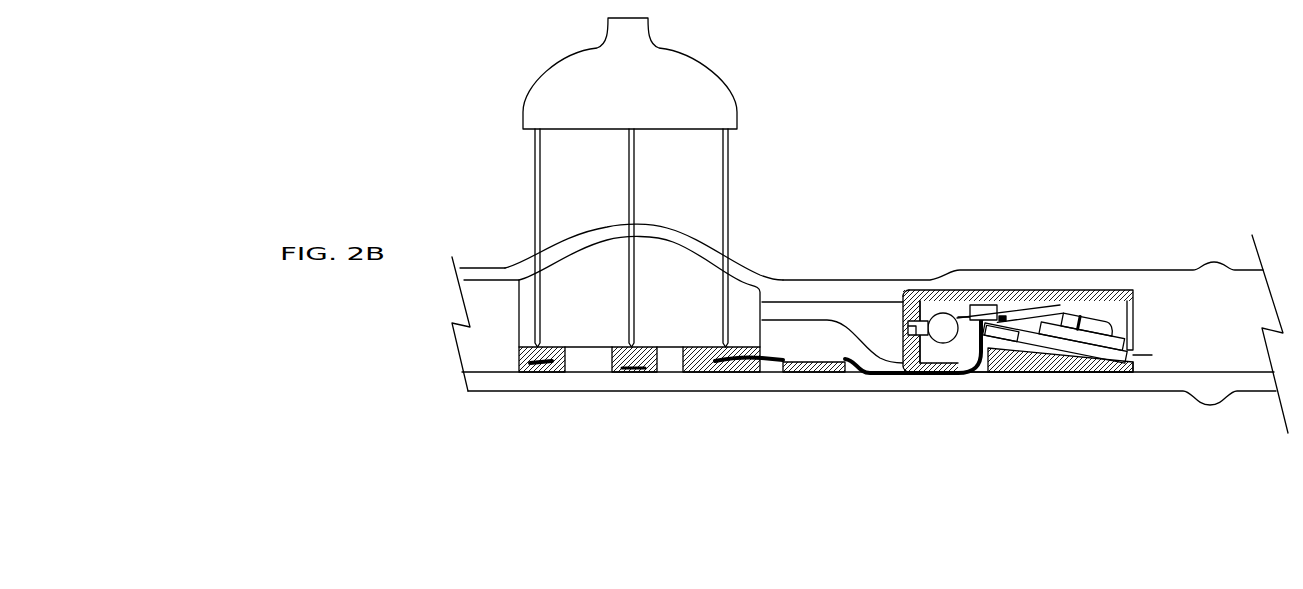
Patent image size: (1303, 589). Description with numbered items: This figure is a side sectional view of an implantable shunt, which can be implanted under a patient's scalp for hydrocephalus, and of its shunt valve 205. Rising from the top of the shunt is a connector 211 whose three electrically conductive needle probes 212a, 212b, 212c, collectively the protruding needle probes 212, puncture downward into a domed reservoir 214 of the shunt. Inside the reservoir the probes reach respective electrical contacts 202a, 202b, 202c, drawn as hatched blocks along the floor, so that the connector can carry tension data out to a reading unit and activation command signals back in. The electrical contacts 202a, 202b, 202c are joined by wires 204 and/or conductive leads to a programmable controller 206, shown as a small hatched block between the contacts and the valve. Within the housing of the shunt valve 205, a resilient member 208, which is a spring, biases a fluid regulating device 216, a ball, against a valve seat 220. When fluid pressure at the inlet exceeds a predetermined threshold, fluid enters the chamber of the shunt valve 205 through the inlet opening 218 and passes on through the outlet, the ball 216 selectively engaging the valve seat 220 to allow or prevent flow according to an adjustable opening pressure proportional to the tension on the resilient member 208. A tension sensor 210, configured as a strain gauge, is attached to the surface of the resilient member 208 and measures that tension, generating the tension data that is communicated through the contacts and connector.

The shunt valve 205 is at (1143, 295).
The connector 211 is at (703, 63).
The electrically conductive needle probe 212a is at (535, 183).
The electrically conductive needle probe 212b is at (635, 182).
The electrically conductive needle probe 212c is at (728, 188).
The electrically conductive needle probes 212 is at (1103, 313).
The reservoir 214 is at (703, 242).
The electrical contact 202a is at (521, 372).
The electrical contact 202b is at (612, 372).
The electrical contact 202c is at (683, 372).
The wires 204 is at (768, 358).
The programmable controller 206 is at (810, 360).
The resilient member 208 is at (958, 325).
The tension sensor 210 is at (996, 310).
The fluid regulating device 216 is at (942, 323).
The inlet opening 218 is at (927, 353).
The valve seat 220 is at (1125, 356).